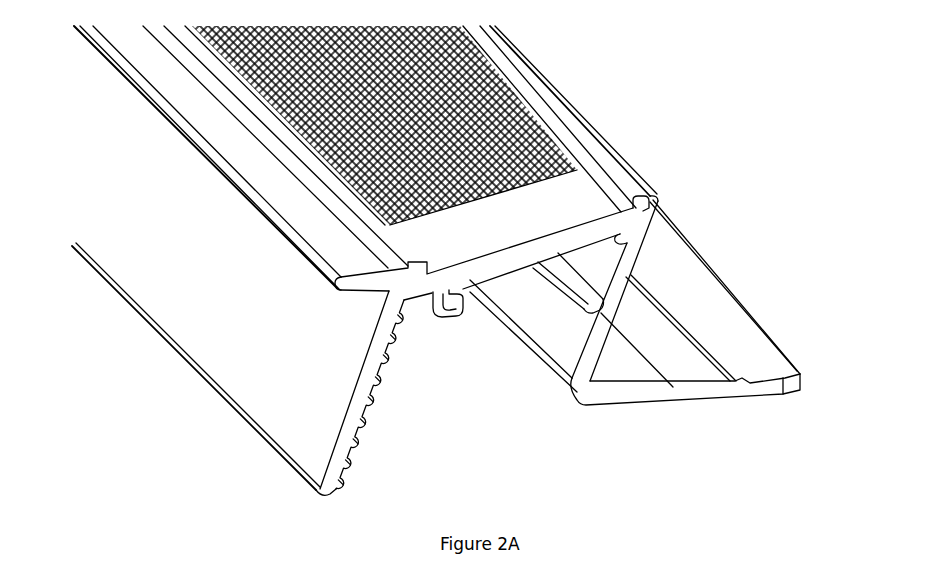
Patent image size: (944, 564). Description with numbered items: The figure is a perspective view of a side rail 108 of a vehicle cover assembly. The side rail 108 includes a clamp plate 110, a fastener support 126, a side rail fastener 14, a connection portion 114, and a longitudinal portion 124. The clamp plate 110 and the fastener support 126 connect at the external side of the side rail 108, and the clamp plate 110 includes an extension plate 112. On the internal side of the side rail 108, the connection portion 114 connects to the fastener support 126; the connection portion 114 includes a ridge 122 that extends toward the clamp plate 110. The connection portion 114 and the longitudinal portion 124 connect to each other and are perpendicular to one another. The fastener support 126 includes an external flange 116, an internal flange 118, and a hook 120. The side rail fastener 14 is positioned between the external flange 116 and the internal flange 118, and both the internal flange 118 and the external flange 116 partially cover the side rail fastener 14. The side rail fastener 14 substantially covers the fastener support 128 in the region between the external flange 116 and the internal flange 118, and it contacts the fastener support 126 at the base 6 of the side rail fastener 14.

The base 6 is at (580, 163).
The side rail fastener 14 is at (200, 55).
The side rail 108 is at (643, 85).
The clamp plate 110 is at (287, 392).
The extension plate 112 is at (252, 193).
The connection portion 114 is at (628, 260).
The external flange 116 is at (252, 117).
The internal flange 118 is at (563, 115).
The hook 120 is at (453, 315).
The ridge 122 is at (598, 313).
The longitudinal portion 124 is at (755, 348).
The fastener support 126 is at (488, 272).
The fastener support 128 is at (352, 445).